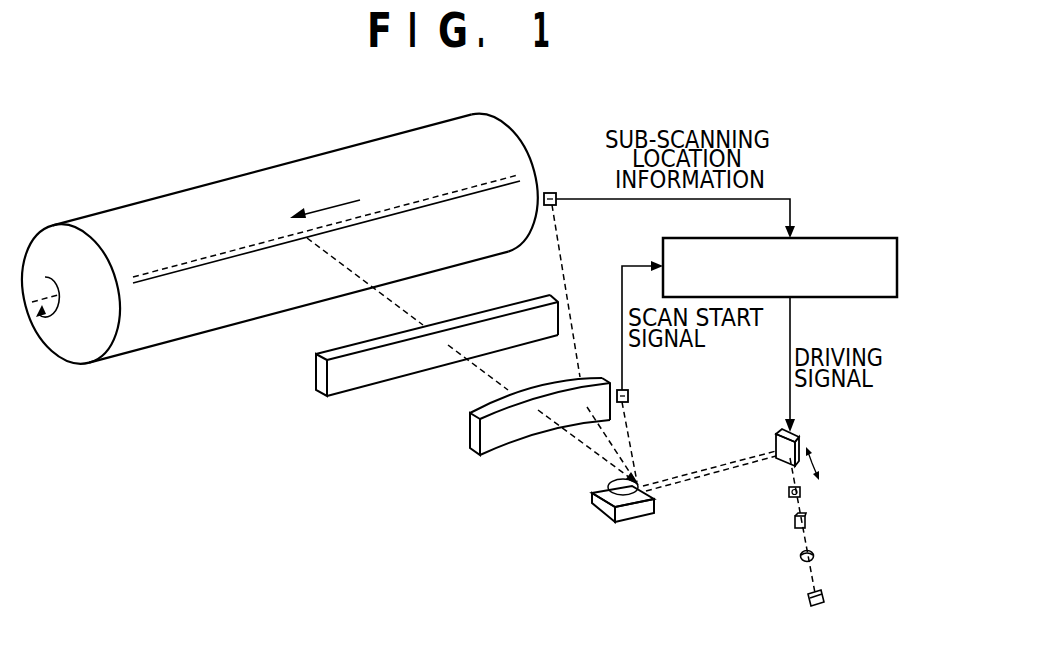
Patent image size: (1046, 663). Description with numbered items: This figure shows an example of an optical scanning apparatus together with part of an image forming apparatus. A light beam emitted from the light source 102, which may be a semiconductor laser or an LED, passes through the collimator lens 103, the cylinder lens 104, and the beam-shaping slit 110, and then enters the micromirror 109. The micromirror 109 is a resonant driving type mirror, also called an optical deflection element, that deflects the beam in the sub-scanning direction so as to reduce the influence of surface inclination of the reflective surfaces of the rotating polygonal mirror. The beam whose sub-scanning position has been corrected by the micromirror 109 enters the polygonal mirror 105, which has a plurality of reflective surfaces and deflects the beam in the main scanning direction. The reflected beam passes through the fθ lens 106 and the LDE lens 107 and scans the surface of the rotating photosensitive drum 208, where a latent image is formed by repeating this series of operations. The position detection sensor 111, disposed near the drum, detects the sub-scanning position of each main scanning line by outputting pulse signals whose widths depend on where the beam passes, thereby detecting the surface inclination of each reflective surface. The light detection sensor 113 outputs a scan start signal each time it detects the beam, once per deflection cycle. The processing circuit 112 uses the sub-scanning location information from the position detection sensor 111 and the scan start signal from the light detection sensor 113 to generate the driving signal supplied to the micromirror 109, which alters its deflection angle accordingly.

The photosensitive drum 208 is at (105, 222).
The position detection sensor 111 is at (551, 192).
The processing circuit 112 is at (847, 237).
The light detection sensor 113 is at (630, 397).
The LDE lens 107 is at (316, 377).
The fθ lens 106 is at (470, 433).
The polygonal mirror 105 is at (632, 523).
The micromirror 109 is at (823, 430).
The beam-shaping slit 110 is at (789, 492).
The cylinder lens 104 is at (795, 523).
The collimator lens 103 is at (801, 557).
The light source 102 is at (815, 606).